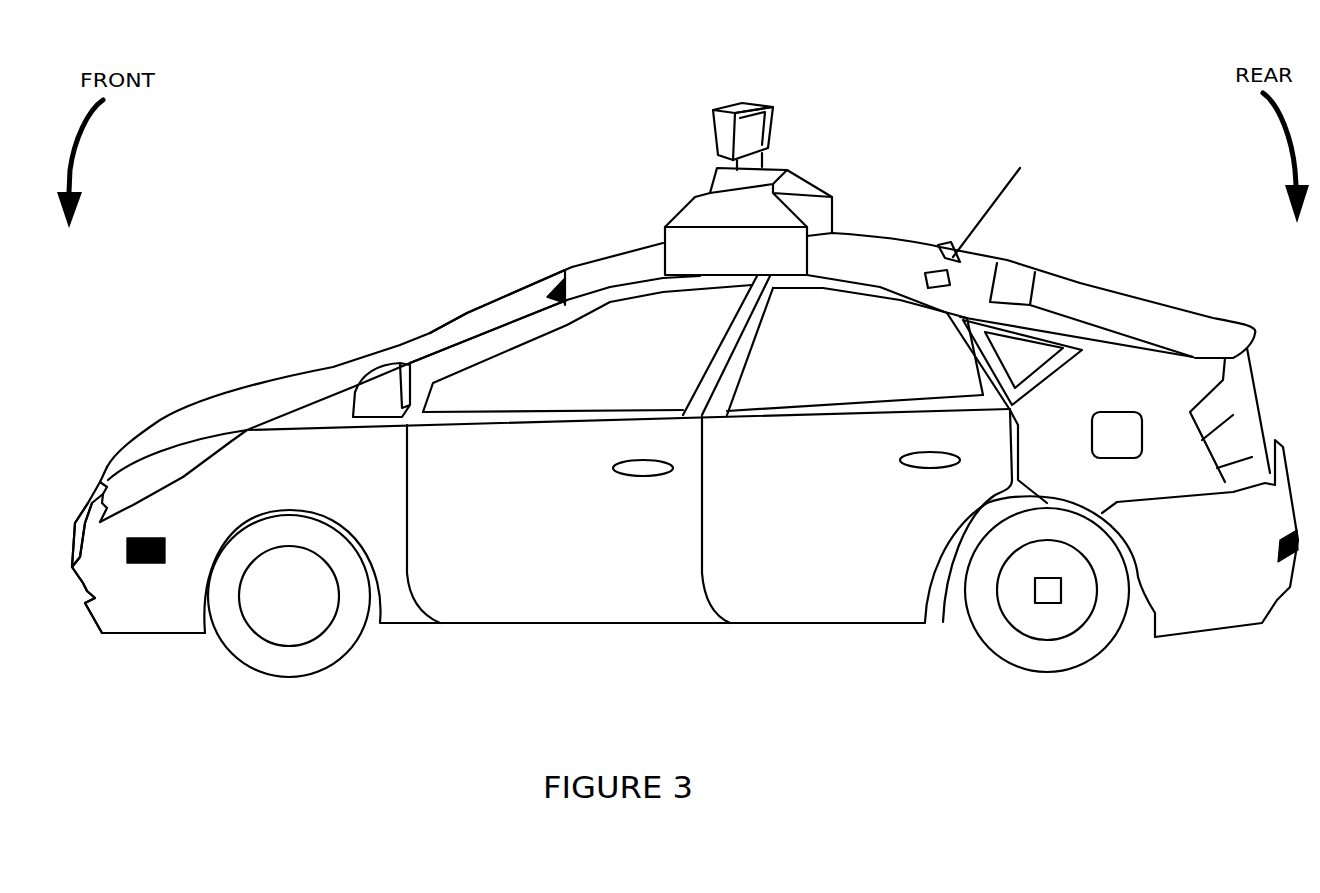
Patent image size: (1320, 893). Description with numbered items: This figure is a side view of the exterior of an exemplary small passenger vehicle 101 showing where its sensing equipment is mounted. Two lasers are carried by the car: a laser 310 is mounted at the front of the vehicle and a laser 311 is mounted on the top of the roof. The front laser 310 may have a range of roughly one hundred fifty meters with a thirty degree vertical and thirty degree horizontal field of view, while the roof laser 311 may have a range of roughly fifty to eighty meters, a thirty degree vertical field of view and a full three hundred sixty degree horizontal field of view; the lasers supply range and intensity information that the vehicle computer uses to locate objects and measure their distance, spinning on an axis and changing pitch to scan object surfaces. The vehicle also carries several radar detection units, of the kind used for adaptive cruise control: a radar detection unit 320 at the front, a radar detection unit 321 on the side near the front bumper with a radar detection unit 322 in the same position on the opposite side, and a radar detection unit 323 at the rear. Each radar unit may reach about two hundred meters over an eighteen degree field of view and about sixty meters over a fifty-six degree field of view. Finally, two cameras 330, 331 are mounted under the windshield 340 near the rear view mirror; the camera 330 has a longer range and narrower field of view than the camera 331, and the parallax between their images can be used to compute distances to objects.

The vehicle 101 is at (352, 54).
The laser 311 is at (719, 122).
The camera 330 is at (547, 290).
The camera 331 is at (556, 287).
The windshield 340 is at (473, 327).
The laser 310 is at (75, 523).
The radar detection unit 320 is at (85, 585).
The radar detection unit 321 is at (147, 565).
The radar detection unit 322 is at (146, 550).
The radar detection unit 323 is at (1297, 562).